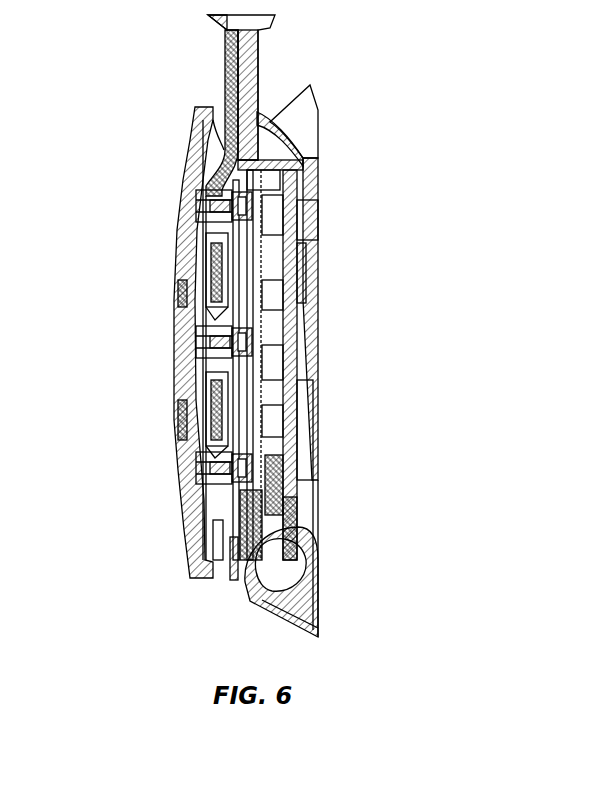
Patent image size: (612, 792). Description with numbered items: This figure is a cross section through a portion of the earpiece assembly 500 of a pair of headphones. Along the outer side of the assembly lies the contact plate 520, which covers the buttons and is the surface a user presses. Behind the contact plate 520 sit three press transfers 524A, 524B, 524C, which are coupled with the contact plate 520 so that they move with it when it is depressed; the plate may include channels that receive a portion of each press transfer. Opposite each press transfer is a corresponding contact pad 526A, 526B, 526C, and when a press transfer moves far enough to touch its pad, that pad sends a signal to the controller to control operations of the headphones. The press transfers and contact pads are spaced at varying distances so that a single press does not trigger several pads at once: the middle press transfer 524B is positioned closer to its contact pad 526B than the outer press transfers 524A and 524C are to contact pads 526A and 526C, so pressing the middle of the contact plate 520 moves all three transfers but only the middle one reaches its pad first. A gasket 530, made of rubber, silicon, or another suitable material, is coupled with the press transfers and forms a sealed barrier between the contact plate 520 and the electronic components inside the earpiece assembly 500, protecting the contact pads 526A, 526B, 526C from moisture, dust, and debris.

The earpiece assembly 500 is at (375, 90).
The contact plate 520 is at (174, 368).
The press transfer 524A is at (178, 210).
The press transfer 524B is at (178, 342).
The press transfer 524C is at (196, 470).
The contact pad 526A is at (240, 210).
The contact pad 526B is at (240, 344).
The contact pad 526C is at (240, 470).
The gasket 530 is at (256, 410).